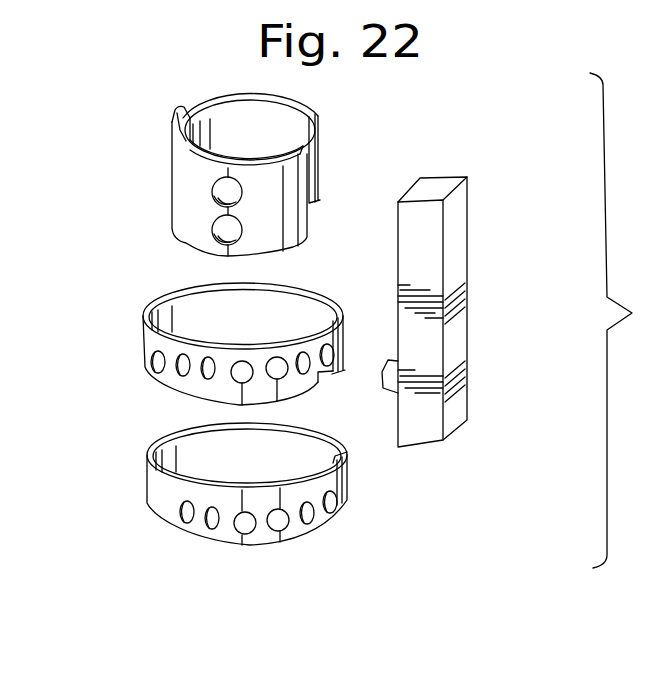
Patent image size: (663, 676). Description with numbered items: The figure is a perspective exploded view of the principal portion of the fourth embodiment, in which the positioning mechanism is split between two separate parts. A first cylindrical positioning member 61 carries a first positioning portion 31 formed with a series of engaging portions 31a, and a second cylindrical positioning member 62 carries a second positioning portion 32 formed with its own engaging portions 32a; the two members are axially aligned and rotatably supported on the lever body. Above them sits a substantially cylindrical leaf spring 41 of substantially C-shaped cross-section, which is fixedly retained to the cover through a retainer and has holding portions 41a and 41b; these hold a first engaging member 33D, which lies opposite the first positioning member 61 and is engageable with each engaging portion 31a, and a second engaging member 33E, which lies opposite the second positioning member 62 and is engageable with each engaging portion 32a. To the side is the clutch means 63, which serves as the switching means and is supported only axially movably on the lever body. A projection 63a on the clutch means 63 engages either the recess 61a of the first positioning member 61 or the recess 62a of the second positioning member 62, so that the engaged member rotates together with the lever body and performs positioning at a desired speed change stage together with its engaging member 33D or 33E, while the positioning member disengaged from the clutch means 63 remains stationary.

The leaf spring 41 is at (297, 176).
The second engaging member 33E is at (219, 180).
The holding portion 41b is at (213, 193).
The first engaging member 33D is at (213, 224).
The holding portion 41a is at (213, 237).
The second cylindrical positioning member 62 is at (143, 342).
The engaging portion 32a is at (176, 372).
The second positioning portion 32 is at (200, 380).
The recess 62a is at (327, 373).
The first cylindrical positioning member 61 is at (143, 477).
The engaging portion 31a is at (207, 523).
The first positioning portion 31 is at (235, 535).
The recess 61a is at (337, 485).
The clutch means 63 is at (465, 275).
The projection 63a is at (390, 383).